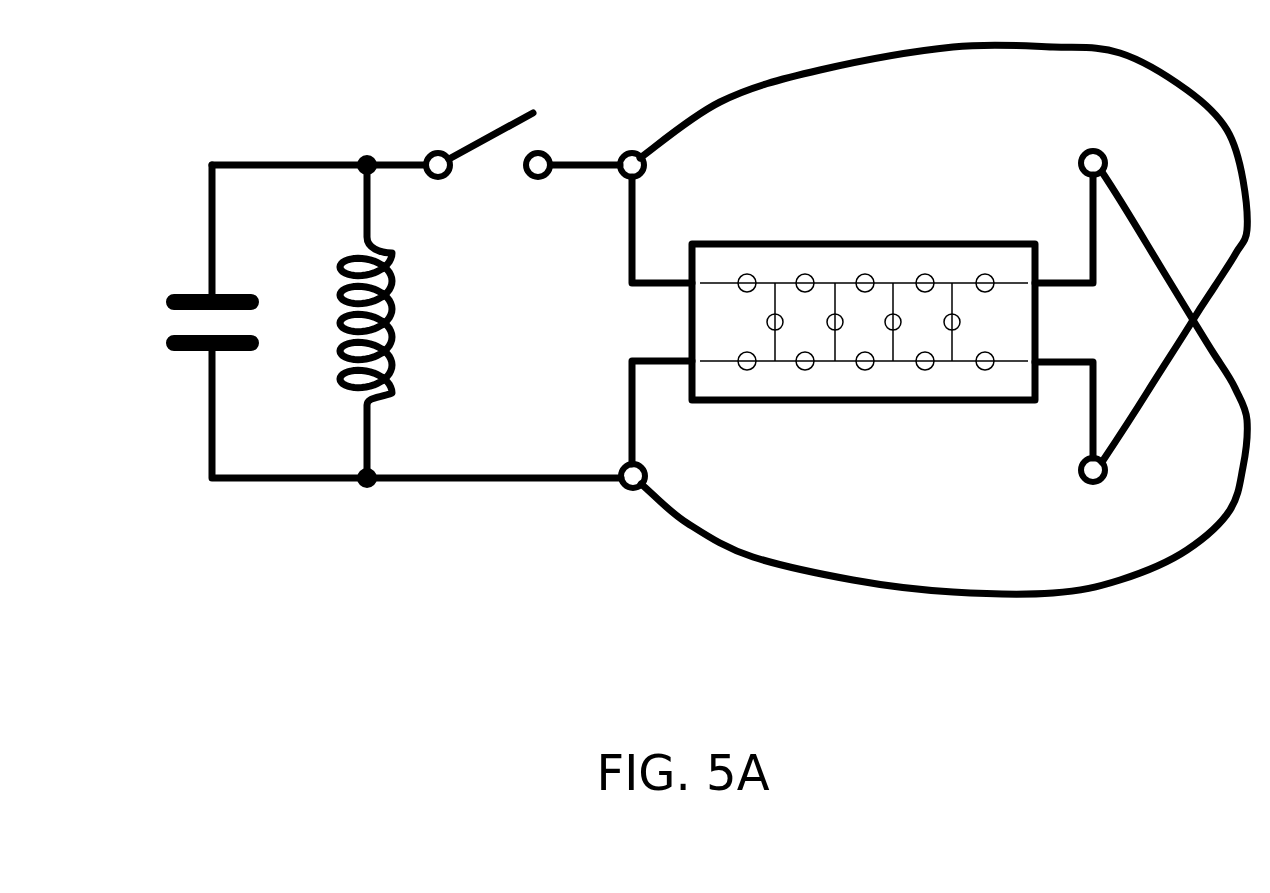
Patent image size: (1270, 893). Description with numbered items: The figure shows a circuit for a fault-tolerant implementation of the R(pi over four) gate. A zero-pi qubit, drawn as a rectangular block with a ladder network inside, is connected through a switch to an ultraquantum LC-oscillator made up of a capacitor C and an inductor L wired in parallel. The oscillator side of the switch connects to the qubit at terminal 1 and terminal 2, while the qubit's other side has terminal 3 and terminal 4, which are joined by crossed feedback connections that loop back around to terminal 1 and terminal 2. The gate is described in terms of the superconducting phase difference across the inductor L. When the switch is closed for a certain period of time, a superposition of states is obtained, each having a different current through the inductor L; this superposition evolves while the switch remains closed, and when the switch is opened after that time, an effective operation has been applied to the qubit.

The first terminal 1 is at (619, 133).
The second terminal 2 is at (620, 505).
The third terminal 3 is at (1117, 481).
The fourth terminal 4 is at (1109, 144).
The capacitor C is at (184, 326).
The inductor L is at (394, 319).